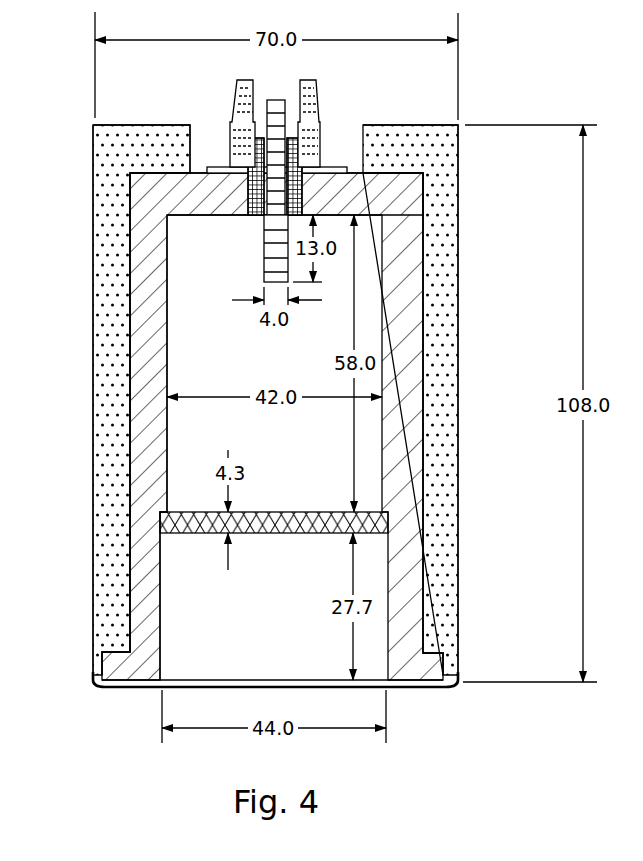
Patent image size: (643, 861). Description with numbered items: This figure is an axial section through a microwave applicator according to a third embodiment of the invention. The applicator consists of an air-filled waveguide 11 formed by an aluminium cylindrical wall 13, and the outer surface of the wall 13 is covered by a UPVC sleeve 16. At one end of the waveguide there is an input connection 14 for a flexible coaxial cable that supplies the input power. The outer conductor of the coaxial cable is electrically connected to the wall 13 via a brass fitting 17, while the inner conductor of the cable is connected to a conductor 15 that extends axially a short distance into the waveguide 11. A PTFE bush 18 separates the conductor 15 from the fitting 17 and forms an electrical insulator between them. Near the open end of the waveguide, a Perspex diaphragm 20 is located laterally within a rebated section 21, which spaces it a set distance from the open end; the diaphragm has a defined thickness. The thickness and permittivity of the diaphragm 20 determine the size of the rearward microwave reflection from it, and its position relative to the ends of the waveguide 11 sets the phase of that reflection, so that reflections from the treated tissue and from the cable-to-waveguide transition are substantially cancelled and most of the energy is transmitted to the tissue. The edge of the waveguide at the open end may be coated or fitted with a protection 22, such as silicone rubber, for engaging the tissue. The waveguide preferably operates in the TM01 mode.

The waveguide 11 is at (470, 338).
The cylindrical wall 13 is at (412, 413).
The input connection 14 is at (336, 97).
The conductor 15 is at (262, 249).
The UPVC sleeve 16 is at (440, 257).
The brass fitting 17 is at (318, 123).
The PTFE bush 18 is at (250, 212).
The Perspex diaphragm 20 is at (180, 534).
The rebated section 21 is at (157, 570).
The protection 22 is at (136, 685).